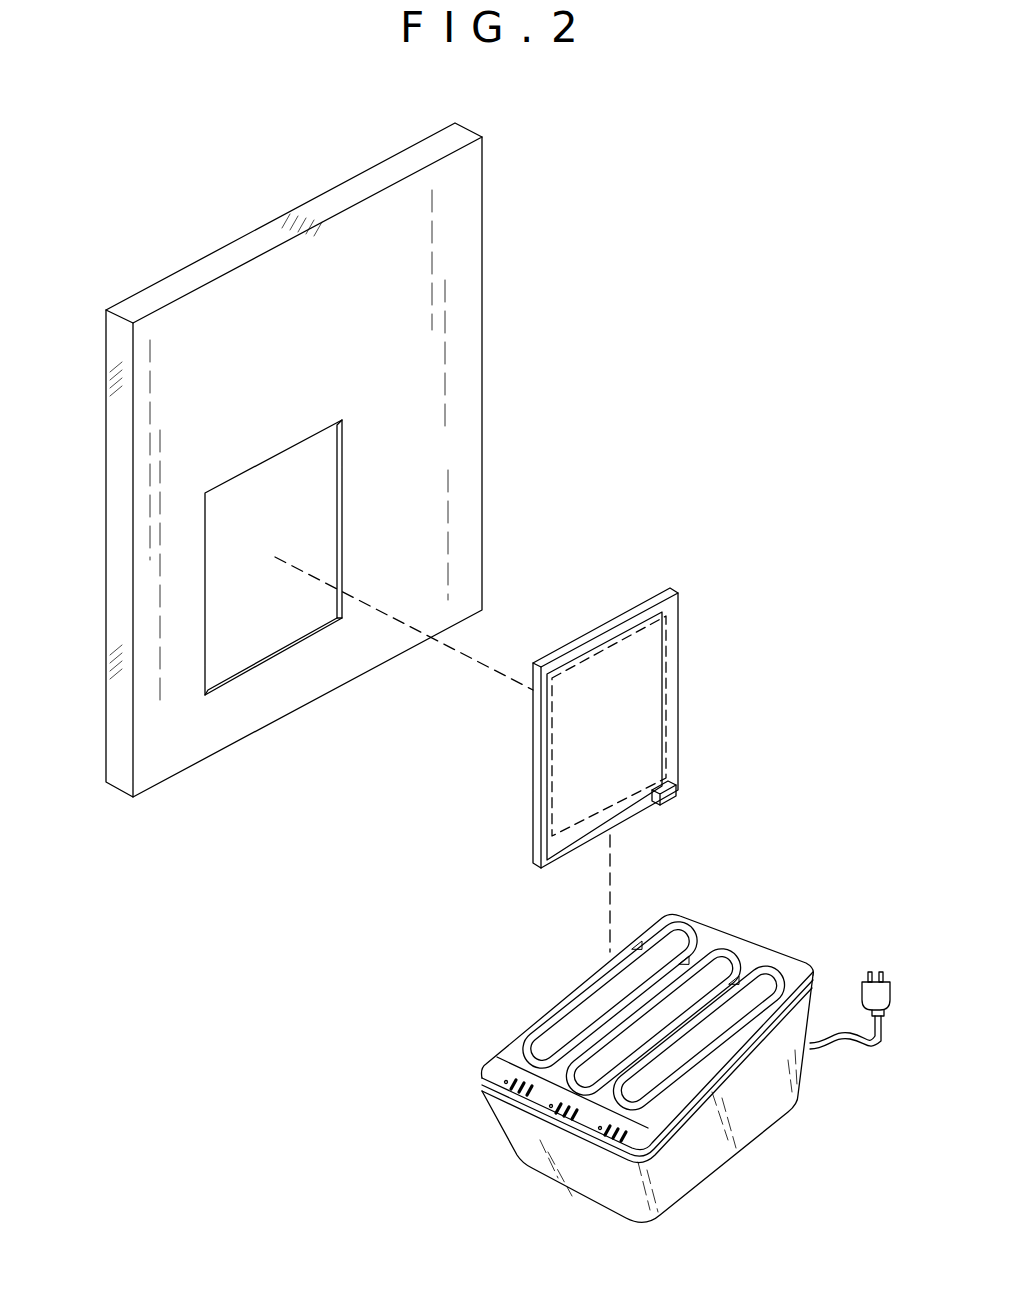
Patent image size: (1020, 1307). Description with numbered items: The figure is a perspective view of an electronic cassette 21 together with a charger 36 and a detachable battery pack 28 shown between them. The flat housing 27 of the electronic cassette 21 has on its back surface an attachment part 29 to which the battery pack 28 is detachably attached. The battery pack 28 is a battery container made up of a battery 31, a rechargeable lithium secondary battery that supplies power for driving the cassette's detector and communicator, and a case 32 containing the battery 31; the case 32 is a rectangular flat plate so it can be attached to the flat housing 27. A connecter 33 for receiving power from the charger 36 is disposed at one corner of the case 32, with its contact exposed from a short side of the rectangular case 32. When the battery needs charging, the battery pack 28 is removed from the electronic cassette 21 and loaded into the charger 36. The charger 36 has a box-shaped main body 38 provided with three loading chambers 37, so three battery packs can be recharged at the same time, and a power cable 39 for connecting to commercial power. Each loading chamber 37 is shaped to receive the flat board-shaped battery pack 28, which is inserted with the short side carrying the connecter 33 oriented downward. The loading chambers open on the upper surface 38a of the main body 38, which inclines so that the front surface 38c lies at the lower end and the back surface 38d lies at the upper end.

The electronic cassette 21 is at (339, 455).
The housing 27 is at (487, 268).
The attachment part 29 is at (342, 490).
The battery pack 28 is at (650, 692).
The case 32 is at (678, 658).
The battery 31 is at (667, 717).
The connecter 33 is at (680, 788).
The charger 36 is at (632, 1036).
The loading chamber 37 is at (675, 930).
The main body 38 is at (669, 1068).
The upper surface 38a is at (548, 1017).
The front surface 38c is at (552, 1170).
The back surface 38d is at (812, 995).
The power cable 39 is at (850, 1052).